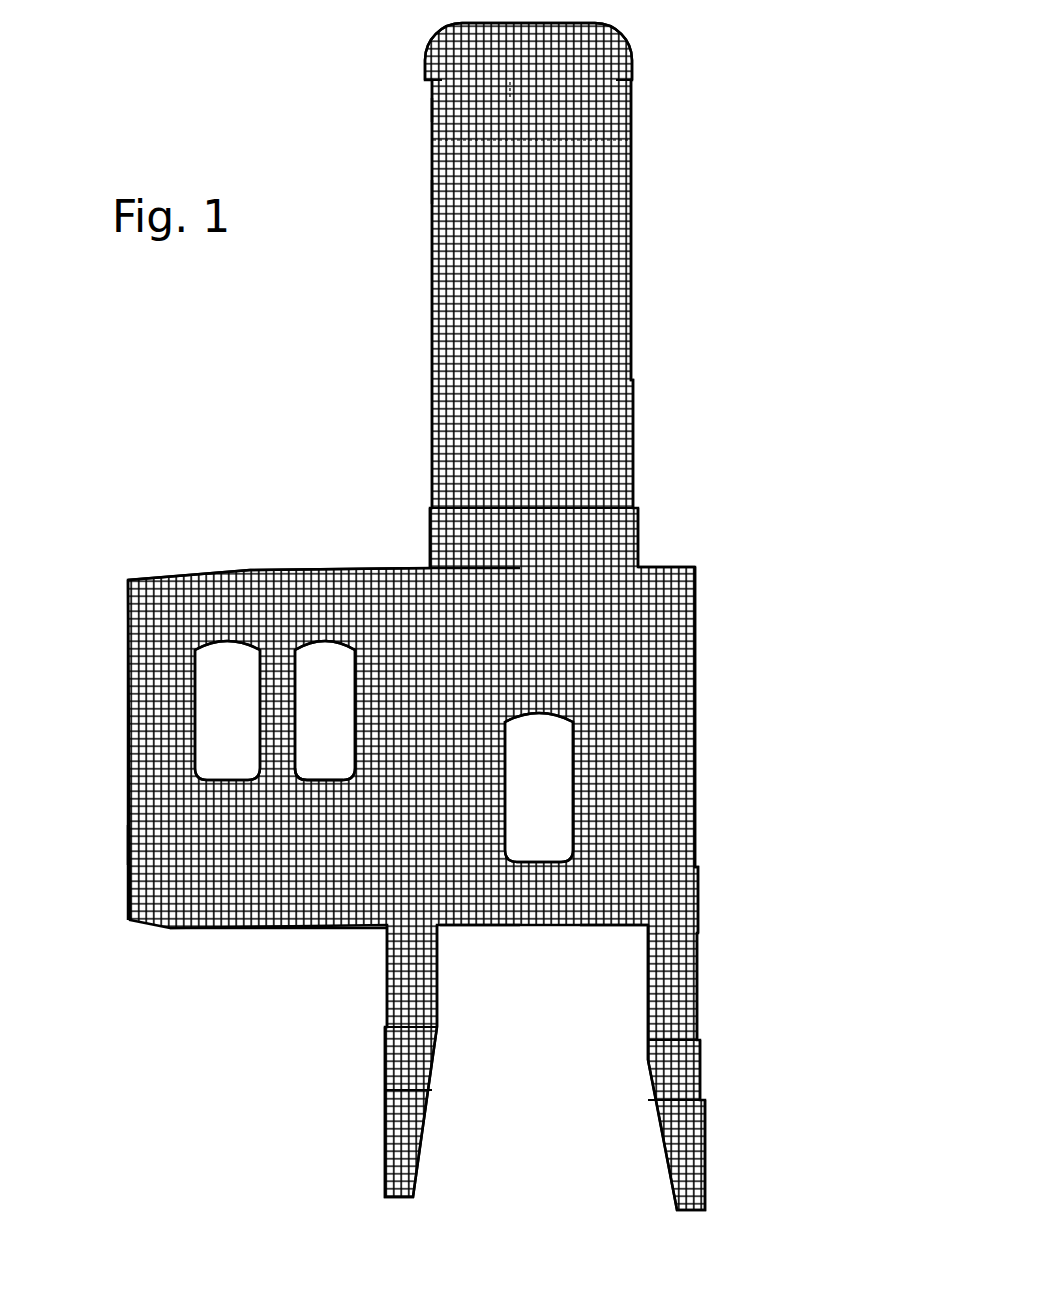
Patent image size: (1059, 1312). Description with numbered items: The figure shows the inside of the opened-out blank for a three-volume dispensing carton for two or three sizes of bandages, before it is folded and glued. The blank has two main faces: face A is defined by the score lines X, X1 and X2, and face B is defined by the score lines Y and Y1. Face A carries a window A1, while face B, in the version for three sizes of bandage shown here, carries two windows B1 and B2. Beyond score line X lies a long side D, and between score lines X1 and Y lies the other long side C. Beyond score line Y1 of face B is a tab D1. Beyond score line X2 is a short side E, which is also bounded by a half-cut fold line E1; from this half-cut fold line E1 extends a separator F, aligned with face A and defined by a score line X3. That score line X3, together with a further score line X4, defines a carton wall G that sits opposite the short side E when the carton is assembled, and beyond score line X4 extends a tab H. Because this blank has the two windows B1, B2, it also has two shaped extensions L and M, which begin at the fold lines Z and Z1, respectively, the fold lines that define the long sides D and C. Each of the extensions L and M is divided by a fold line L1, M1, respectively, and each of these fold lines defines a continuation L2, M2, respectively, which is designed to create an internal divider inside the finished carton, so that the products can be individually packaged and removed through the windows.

The tab H is at (612, 45).
The carton wall G is at (626, 103).
The separator F is at (590, 312).
The half-cut fold line E1 is at (633, 448).
The short side E is at (590, 537).
The fold line Z is at (670, 897).
The tab D1 is at (130, 852).
The main face B is at (206, 594).
The long side C is at (340, 593).
The main face A is at (633, 592).
The long side D is at (676, 592).
The window B1 is at (225, 476).
The window B2 is at (322, 476).
The window A1 is at (539, 787).
The shaped extension M is at (405, 985).
The fold line M1 is at (405, 1072).
The continuation M2 is at (400, 1143).
The shaped extension L is at (680, 985).
The fold line L1 is at (680, 1070).
The continuation L2 is at (698, 1137).
The score line X4 is at (515, 110).
The score line X3 is at (473, 135).
The score line X2 is at (480, 573).
The score line X1 is at (440, 890).
The score line X is at (642, 890).
The score line Y1 is at (180, 840).
The score line Y is at (385, 840).
The fold line Z1 is at (410, 902).